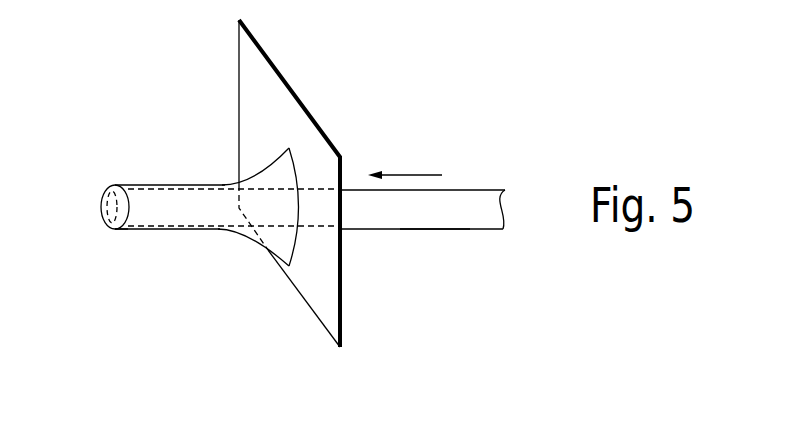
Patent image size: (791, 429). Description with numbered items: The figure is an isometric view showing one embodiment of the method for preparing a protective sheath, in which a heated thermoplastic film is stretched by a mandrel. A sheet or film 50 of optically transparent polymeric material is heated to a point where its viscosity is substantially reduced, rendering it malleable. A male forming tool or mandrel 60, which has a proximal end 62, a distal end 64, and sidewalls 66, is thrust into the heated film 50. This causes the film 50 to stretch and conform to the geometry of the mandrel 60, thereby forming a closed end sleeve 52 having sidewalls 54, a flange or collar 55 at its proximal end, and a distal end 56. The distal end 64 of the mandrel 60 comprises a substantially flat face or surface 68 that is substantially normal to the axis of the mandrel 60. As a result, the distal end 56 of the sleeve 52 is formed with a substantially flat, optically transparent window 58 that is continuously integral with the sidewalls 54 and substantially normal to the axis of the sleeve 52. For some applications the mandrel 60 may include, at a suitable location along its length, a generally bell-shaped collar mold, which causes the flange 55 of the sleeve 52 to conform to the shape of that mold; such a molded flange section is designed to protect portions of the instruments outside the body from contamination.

The film 50 is at (272, 58).
The closed end sleeve 52 is at (162, 262).
The sidewalls 54 is at (205, 230).
The flange 55 is at (258, 167).
The distal end 56 is at (116, 229).
The window 58 is at (101, 212).
The mandrel 60 is at (380, 292).
The proximal end 62 is at (510, 208).
The distal end 64 is at (138, 185).
The sidewalls 66 is at (432, 230).
The flat face 68 is at (110, 188).